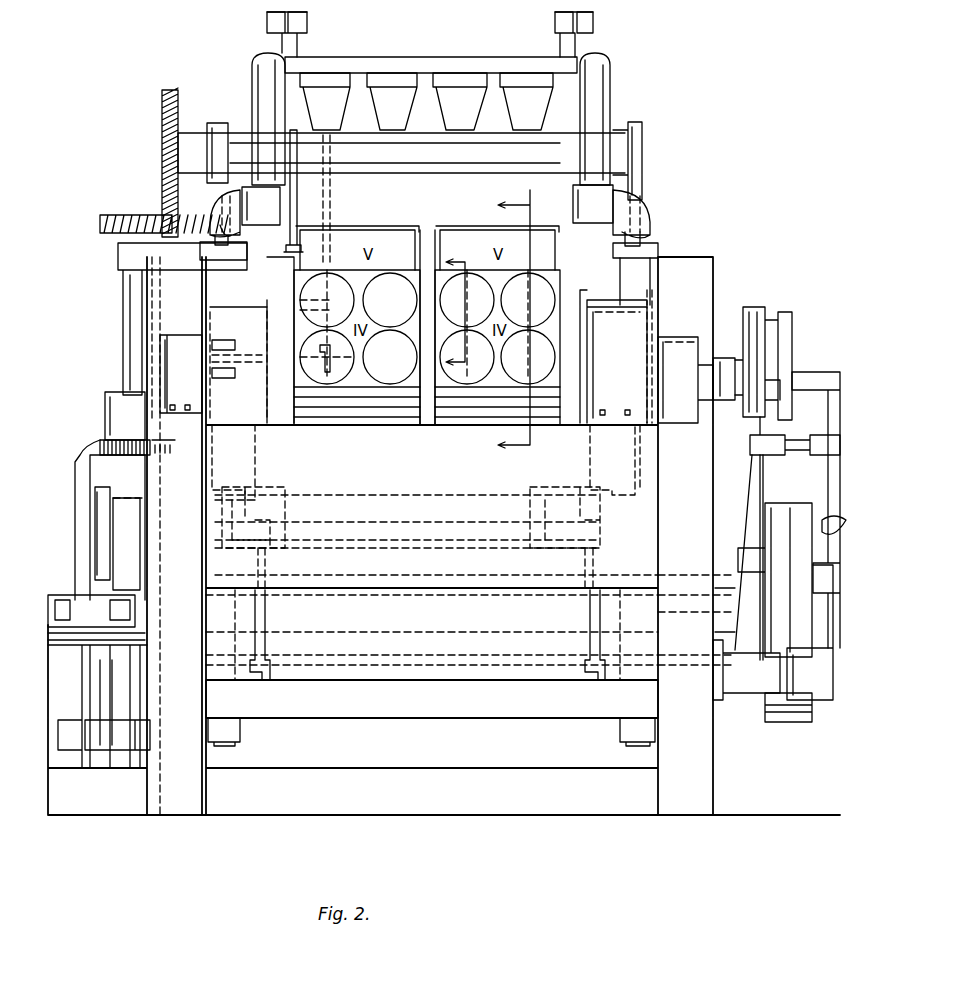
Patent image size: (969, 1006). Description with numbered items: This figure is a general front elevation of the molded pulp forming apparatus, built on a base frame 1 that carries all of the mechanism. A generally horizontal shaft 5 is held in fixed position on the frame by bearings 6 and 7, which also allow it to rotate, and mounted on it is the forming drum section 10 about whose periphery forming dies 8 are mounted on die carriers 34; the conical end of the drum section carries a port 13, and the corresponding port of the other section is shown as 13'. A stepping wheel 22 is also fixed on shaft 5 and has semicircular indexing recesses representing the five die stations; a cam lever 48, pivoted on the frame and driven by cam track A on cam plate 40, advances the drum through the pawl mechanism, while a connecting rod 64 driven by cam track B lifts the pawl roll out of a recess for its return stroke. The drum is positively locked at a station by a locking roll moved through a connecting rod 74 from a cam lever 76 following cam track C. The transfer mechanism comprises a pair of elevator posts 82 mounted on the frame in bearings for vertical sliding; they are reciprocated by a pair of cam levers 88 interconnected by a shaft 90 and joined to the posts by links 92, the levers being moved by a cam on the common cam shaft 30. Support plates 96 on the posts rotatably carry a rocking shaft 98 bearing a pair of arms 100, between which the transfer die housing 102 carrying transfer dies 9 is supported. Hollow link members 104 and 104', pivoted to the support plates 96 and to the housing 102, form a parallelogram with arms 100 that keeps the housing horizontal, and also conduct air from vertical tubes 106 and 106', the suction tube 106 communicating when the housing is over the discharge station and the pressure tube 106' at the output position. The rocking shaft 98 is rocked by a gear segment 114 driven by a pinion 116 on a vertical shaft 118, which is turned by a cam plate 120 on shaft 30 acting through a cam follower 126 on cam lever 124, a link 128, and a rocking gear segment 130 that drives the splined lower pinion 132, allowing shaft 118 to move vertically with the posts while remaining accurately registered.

The base frame 1 is at (538, 815).
The shaft 5 is at (718, 358).
The bearing 6 is at (680, 333).
The bearing 7 is at (177, 340).
The forming dies 8 is at (534, 366).
The transfer dies 9 is at (536, 112).
The forming drum section 10 is at (427, 250).
The port 13 is at (251, 462).
The bracket 13' is at (641, 460).
The stepping wheel 22 is at (762, 307).
The cam shaft 30 is at (720, 588).
The die carriers 34 is at (560, 285).
The cam plate 40 is at (790, 722).
The cam lever 48 is at (750, 497).
The connecting rod 64 is at (832, 413).
The connecting rod 74 is at (830, 540).
The cam lever 76 is at (822, 618).
The elevator posts 82 is at (628, 678).
The cam levers 88 is at (588, 488).
The shaft 90 is at (390, 495).
The links 92 is at (590, 612).
The support plates 96 is at (640, 160).
The rocking shaft 98 is at (412, 152).
The arms 100 is at (590, 50).
The transfer die housing 102 is at (440, 60).
The hollow link member 104 is at (609, 117).
The hollow link member 104' is at (256, 118).
The vertical tube 106 is at (655, 224).
The vertical tube 106' is at (212, 225).
The gear segment 114 is at (162, 130).
The pinion 116 is at (120, 215).
The vertical shaft 118 is at (125, 300).
The cam plate 120 is at (120, 650).
The cam lever 124 is at (92, 680).
The cam follower 126 is at (128, 600).
The link 128 is at (100, 520).
The gear segment 130 is at (80, 465).
The lower pinion 132 is at (103, 432).